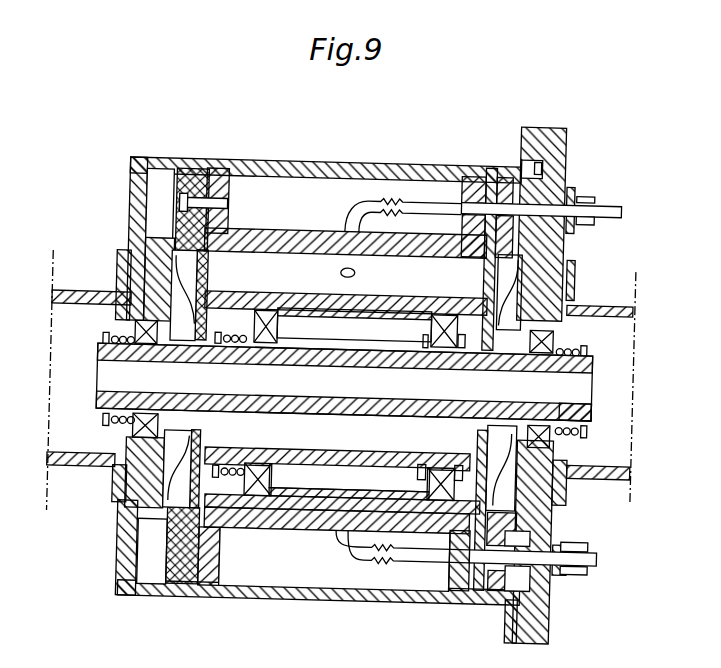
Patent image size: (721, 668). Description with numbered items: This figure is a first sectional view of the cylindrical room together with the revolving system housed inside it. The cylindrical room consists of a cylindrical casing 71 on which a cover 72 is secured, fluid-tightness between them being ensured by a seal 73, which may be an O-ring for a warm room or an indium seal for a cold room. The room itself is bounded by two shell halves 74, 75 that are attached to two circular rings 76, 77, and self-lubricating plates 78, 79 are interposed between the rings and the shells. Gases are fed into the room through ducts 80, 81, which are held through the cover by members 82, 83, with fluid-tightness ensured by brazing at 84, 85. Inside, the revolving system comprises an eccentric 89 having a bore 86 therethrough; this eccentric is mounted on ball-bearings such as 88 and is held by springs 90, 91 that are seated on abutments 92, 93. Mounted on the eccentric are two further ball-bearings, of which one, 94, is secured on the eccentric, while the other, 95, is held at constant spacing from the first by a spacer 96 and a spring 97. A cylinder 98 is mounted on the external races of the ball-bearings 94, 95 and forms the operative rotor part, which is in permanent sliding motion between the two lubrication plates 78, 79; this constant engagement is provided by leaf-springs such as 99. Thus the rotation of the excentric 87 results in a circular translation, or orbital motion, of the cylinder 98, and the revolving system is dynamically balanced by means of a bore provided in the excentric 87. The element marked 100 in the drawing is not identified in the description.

The cylindrical casing 71 is at (298, 163).
The cover 72 is at (552, 166).
The seal 73 is at (528, 163).
The shell half 74 is at (315, 234).
The shell half 75 is at (355, 531).
The circular ring 76 is at (185, 173).
The circular ring 77 is at (486, 175).
The self-lubricating plate 78 is at (200, 190).
The self-lubricating plate 79 is at (457, 178).
The duct 80 is at (612, 209).
The duct 81 is at (603, 557).
The member 82 is at (588, 193).
The member 83 is at (577, 569).
The brazing 84 is at (592, 205).
The brazing 85 is at (590, 540).
The bore 86 is at (592, 387).
The excentric 87 is at (592, 410).
The ball-bearing 88 is at (553, 336).
The eccentric 89 is at (132, 332).
The spring 90 is at (585, 432).
The spring 91 is at (104, 427).
The abutment 92 is at (587, 345).
The abutment 93 is at (99, 346).
The ball-bearing 94 is at (566, 302).
The ball-bearing 95 is at (262, 498).
The spacer 96 is at (303, 498).
The spring 97 is at (150, 521).
The cylinder 98 is at (242, 298).
The leaf-spring 99 is at (127, 215).
The plate 100 is at (405, 468).